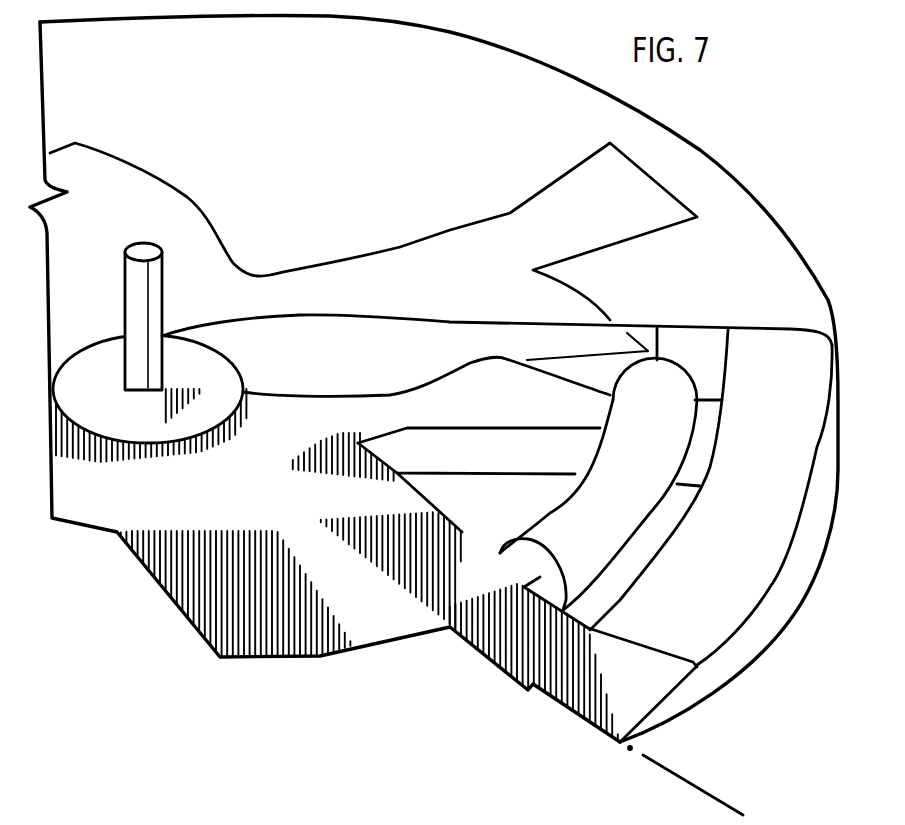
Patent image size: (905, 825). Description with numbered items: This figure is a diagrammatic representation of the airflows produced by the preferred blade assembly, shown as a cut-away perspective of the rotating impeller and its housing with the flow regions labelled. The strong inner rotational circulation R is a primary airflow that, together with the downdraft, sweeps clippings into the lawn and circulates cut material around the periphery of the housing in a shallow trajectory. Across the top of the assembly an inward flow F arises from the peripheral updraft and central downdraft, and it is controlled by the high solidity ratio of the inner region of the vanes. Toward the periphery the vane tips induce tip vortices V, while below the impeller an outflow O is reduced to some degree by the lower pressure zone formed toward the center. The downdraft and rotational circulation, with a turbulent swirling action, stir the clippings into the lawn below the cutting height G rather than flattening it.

The inner rotational circulation R is at (497, 356).
The inward flow F is at (689, 364).
The tip vortices V is at (598, 484).
The outflow O is at (698, 453).
The cutting height G is at (700, 790).